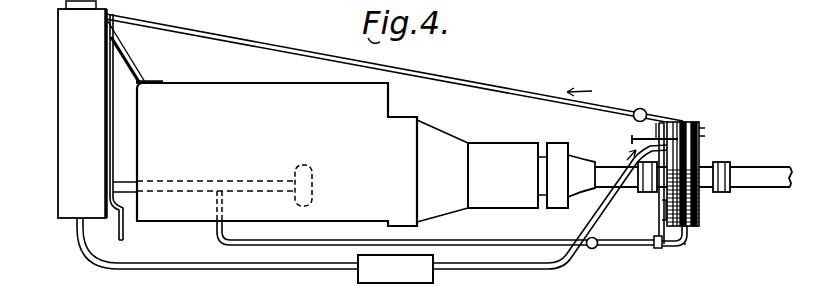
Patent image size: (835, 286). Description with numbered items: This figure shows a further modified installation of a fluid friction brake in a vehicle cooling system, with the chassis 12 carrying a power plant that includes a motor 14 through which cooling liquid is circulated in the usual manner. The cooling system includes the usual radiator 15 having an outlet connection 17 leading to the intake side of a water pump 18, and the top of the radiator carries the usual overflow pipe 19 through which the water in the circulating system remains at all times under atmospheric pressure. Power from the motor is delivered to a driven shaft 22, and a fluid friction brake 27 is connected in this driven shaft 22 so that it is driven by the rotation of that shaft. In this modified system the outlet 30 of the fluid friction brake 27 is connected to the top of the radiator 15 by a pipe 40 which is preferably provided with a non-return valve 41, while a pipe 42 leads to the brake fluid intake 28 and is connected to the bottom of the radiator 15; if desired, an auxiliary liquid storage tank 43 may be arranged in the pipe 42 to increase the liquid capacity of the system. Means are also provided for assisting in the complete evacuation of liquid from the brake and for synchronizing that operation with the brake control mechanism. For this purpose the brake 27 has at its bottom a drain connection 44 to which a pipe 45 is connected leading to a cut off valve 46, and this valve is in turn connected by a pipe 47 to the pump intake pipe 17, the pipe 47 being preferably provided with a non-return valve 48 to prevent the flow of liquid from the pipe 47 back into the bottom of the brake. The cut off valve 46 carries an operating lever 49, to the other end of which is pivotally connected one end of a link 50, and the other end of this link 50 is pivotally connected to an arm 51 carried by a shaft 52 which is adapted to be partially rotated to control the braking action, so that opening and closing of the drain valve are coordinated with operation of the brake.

The vehicle frame 12 is at (165, 285).
The motor 14 is at (365, 154).
The radiator 15 is at (58, 196).
The outlet connection 17 is at (197, 181).
The water pump 18 is at (310, 167).
The overflow pipe 19 is at (124, 232).
The driven shaft 22 is at (607, 173).
The fluid friction brake 27 is at (699, 128).
The fluid intake 28 is at (699, 136).
The outlet 30 is at (687, 121).
The pipe 40 is at (510, 88).
The non-return valve 41 is at (645, 108).
The pipe 42 is at (220, 263).
The auxiliary liquid storage tank 43 is at (395, 269).
The drain connection 44 is at (690, 233).
The pipe 45 is at (683, 247).
The cut off valve 46 is at (657, 248).
The pipe 47 is at (513, 242).
The non-return valve 48 is at (590, 249).
The operating lever 49 is at (659, 226).
The link 50 is at (659, 204).
The arm 51 is at (658, 133).
The shaft 52 is at (638, 138).